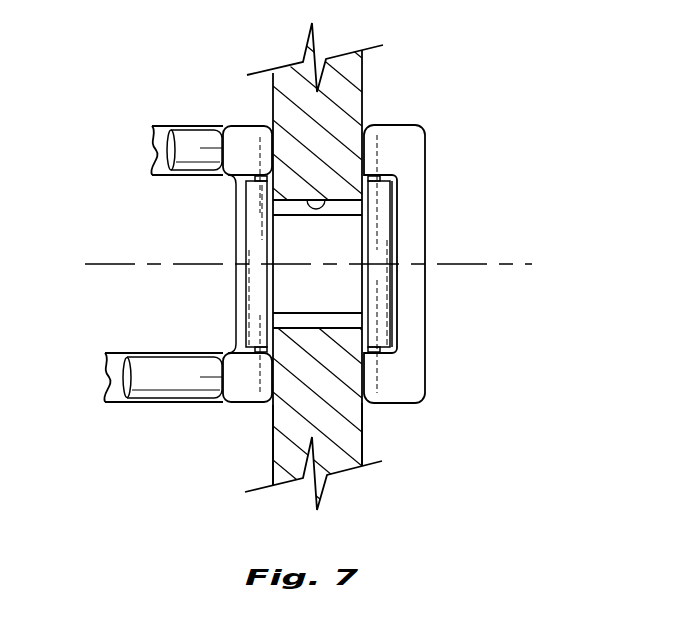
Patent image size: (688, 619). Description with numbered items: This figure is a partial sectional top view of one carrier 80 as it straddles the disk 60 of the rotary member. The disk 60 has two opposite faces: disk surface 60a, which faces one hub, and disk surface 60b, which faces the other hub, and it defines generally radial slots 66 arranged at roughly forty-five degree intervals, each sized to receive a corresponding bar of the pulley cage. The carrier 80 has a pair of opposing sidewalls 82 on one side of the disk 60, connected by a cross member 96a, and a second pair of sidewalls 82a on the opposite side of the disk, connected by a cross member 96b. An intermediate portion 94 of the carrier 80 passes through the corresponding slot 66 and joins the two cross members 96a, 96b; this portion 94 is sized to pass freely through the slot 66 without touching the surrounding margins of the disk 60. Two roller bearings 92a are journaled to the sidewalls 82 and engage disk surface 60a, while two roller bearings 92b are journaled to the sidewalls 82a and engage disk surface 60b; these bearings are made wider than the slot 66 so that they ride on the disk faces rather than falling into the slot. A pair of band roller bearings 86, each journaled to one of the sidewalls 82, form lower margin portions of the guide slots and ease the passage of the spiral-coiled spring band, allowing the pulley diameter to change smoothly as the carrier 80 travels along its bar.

The disk 60 is at (272, 443).
The disk surface 60a is at (272, 425).
The disk surface 60b is at (365, 448).
The slots 66 is at (308, 198).
The carrier 80 is at (432, 128).
The sidewalls 82 is at (165, 125).
The sidewalls 82a is at (390, 125).
The band roller bearings 86 is at (196, 125).
The roller bearings 92a is at (246, 228).
The roller bearings 92b is at (393, 200).
The intermediate portion 94 is at (332, 238).
The cross member 96a is at (246, 299).
The cross member 96b is at (425, 238).